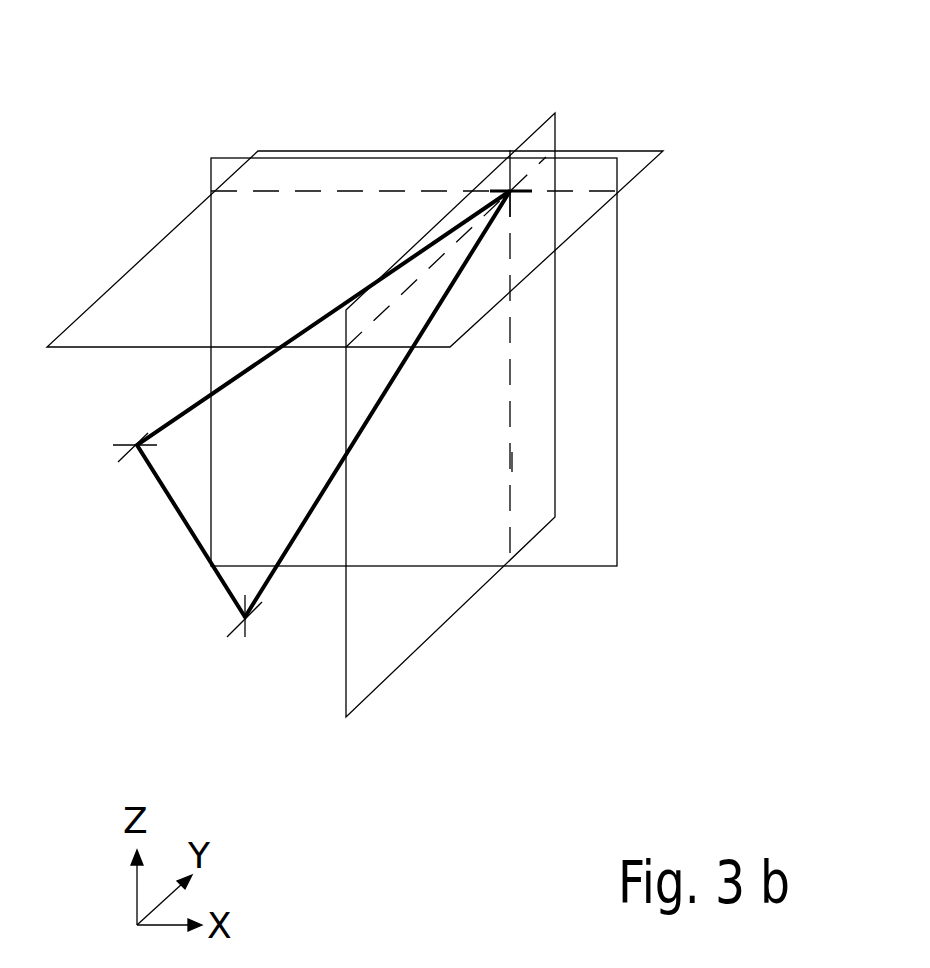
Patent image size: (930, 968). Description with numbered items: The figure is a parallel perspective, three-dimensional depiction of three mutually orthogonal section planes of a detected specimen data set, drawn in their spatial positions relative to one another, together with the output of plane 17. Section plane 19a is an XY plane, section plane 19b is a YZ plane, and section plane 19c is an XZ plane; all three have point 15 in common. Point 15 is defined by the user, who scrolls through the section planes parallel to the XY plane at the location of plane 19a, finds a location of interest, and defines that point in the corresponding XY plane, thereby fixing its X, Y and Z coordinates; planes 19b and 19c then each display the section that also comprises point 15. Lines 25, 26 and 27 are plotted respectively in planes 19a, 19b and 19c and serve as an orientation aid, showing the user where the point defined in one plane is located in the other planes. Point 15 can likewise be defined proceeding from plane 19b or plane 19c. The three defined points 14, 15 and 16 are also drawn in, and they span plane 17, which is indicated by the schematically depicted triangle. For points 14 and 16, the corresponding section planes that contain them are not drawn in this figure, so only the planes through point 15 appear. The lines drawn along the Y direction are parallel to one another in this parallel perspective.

The point 14 is at (137, 453).
The point 15 is at (510, 170).
The point 16 is at (245, 625).
The plane 17 is at (273, 455).
The section plane 19a is at (630, 161).
The section plane 19b is at (403, 645).
The section plane 19c is at (579, 346).
The line 25 is at (313, 192).
The line 26 is at (384, 313).
The line 27 is at (512, 462).